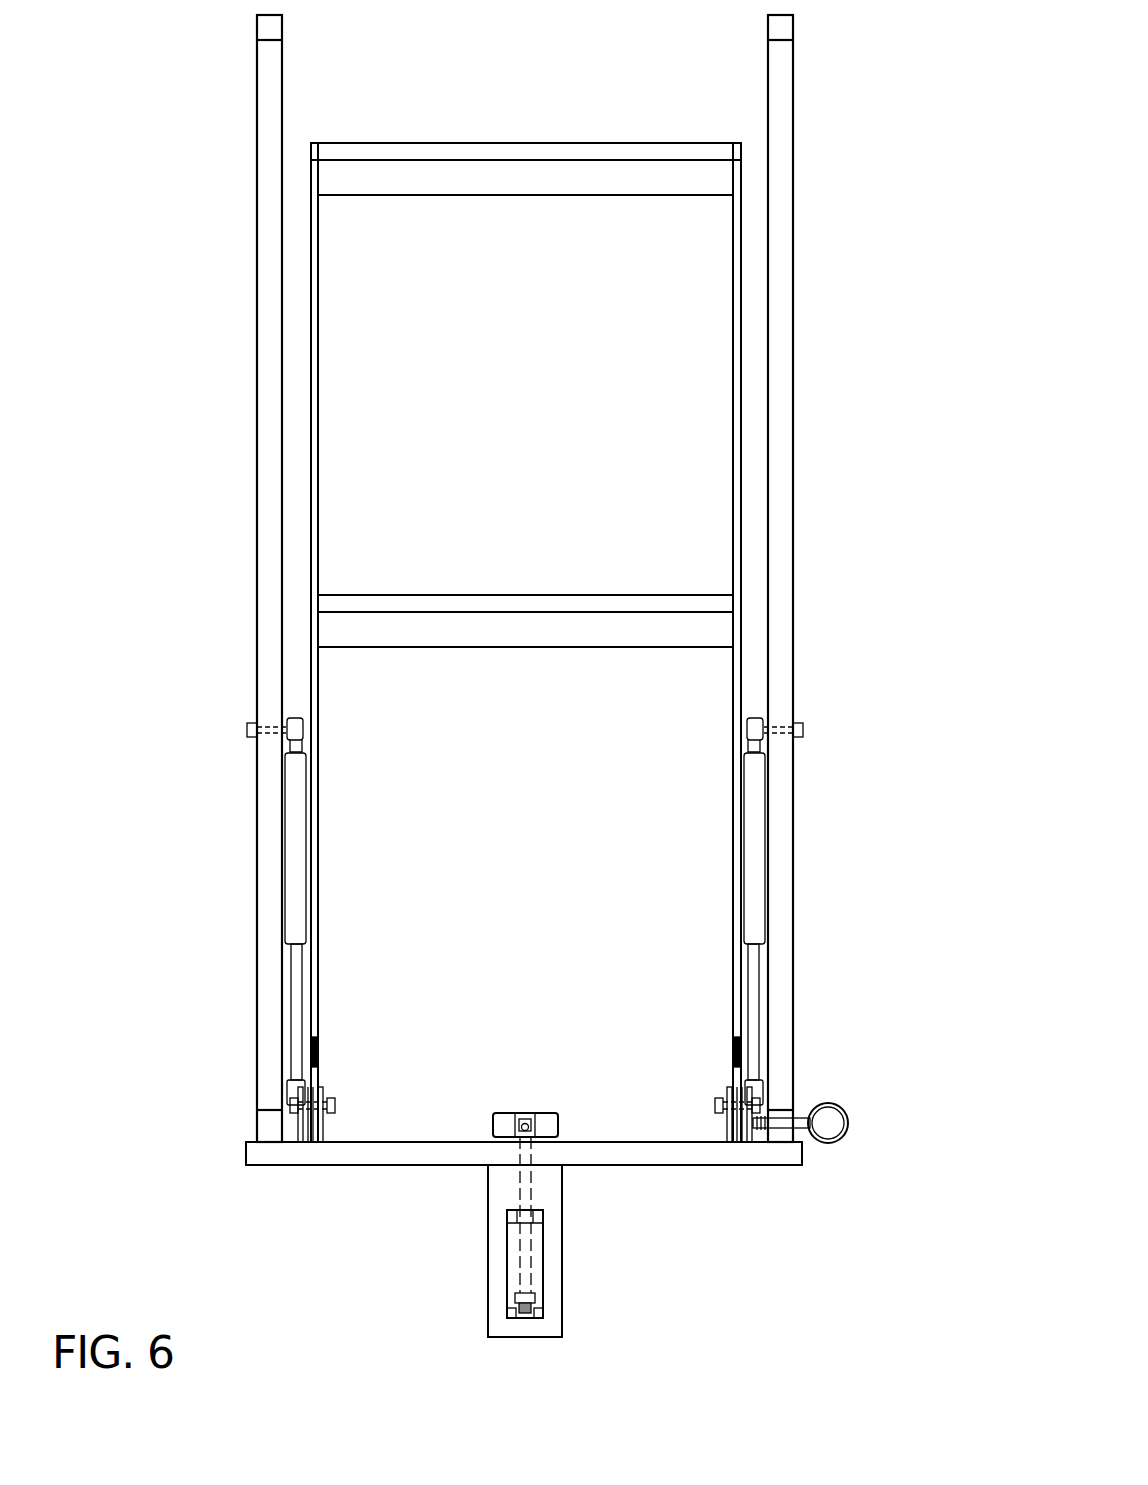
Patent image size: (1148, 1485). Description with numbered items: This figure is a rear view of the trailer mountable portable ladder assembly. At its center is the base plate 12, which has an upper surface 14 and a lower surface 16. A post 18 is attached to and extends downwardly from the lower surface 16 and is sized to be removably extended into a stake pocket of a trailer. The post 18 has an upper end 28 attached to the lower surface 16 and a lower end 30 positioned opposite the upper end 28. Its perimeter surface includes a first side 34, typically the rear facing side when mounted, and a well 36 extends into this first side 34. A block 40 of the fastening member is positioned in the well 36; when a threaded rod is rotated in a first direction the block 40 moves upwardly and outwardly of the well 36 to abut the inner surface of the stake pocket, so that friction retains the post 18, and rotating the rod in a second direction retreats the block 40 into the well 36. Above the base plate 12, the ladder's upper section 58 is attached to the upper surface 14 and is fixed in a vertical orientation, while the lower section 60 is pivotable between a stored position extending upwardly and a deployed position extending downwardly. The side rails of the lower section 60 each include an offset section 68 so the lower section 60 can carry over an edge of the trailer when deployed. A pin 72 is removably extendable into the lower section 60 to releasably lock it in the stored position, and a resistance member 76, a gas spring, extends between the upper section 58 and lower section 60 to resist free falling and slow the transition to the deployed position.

The base plate 12 is at (803, 1153).
The upper surface 14 is at (640, 1142).
The lower surface 16 is at (738, 1165).
The post 18 is at (567, 1297).
The upper end 28 is at (488, 1172).
The lower end 30 is at (508, 1337).
The first side 34 is at (552, 1177).
The well 36 is at (505, 1213).
The block 40 is at (517, 1273).
The upper section 58 is at (807, 398).
The lower section 60 is at (748, 307).
The offset section 68 is at (555, 1113).
The pin 72 is at (807, 1113).
The resistance member 76 is at (298, 845).